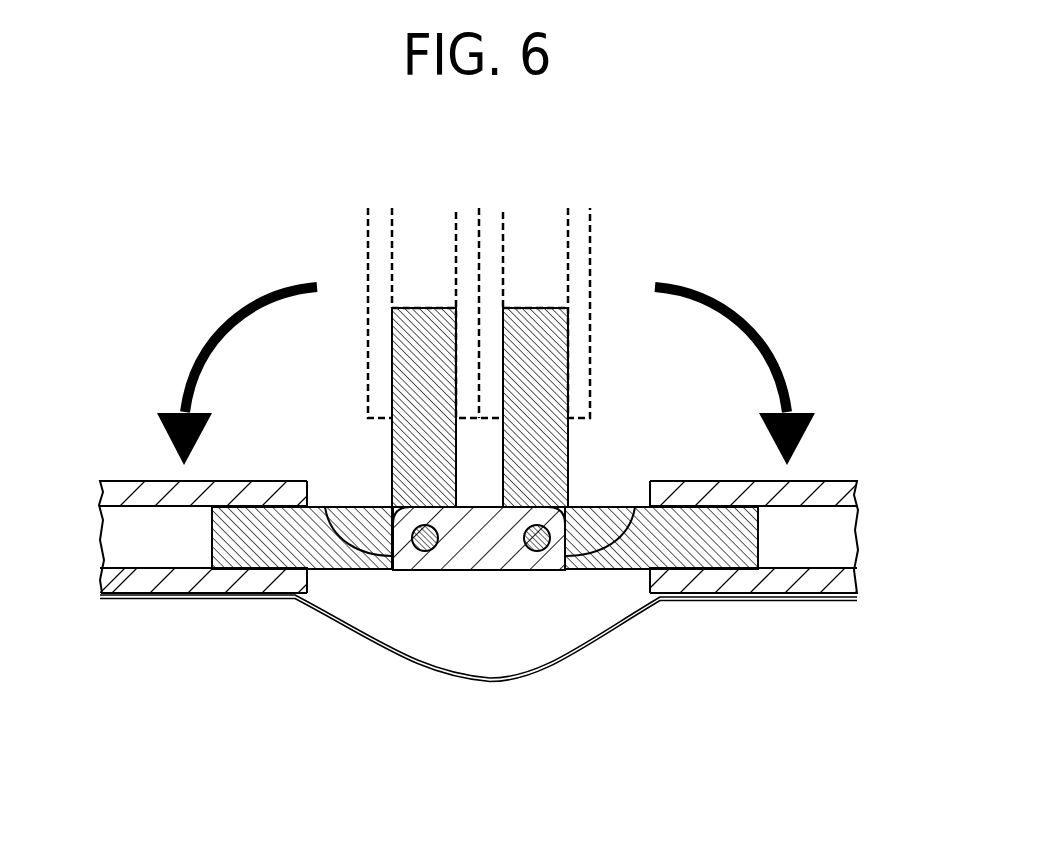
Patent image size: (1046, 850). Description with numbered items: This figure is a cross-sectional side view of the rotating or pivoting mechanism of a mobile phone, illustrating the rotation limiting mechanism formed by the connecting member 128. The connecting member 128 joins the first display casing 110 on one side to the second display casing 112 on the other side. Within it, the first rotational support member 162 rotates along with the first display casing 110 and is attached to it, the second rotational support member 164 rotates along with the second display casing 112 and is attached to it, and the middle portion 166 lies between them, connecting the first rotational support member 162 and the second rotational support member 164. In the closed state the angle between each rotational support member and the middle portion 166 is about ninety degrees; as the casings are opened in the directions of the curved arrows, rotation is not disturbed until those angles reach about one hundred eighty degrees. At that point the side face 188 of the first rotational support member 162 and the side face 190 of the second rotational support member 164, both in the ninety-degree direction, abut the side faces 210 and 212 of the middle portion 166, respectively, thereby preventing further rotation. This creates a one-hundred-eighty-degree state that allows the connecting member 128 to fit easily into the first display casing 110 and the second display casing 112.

The first display casing 110 is at (147, 481).
The second display casing 112 is at (820, 487).
The connecting member 128 is at (248, 778).
The first rotational support member 162 is at (230, 540).
The second rotational support member 164 is at (710, 550).
The middle portion 166 is at (476, 540).
The side face of the first rotational support member 188 is at (408, 506).
The side face of the second rotational support member 190 is at (552, 506).
The side face of the middle portion 210 is at (325, 507).
The side face of the middle portion 212 is at (635, 507).